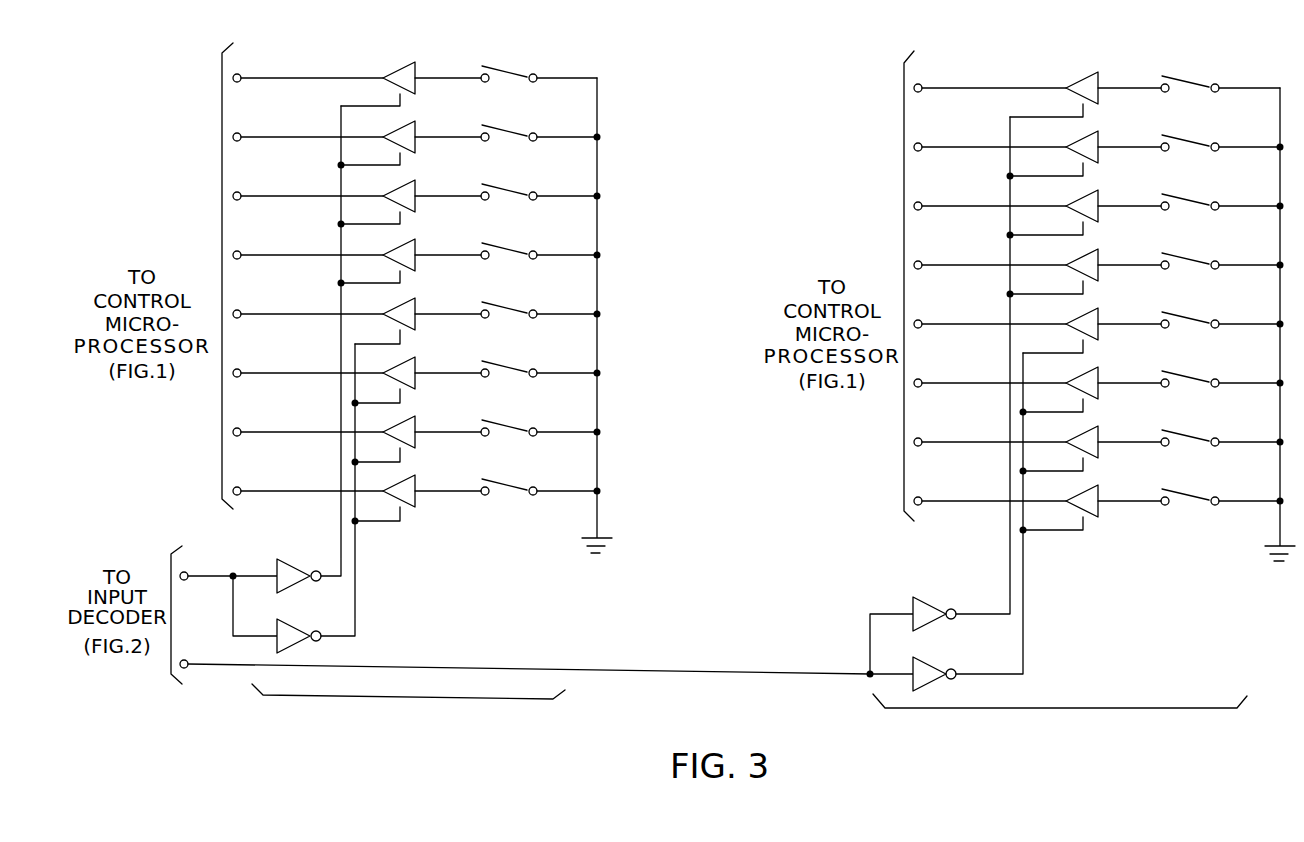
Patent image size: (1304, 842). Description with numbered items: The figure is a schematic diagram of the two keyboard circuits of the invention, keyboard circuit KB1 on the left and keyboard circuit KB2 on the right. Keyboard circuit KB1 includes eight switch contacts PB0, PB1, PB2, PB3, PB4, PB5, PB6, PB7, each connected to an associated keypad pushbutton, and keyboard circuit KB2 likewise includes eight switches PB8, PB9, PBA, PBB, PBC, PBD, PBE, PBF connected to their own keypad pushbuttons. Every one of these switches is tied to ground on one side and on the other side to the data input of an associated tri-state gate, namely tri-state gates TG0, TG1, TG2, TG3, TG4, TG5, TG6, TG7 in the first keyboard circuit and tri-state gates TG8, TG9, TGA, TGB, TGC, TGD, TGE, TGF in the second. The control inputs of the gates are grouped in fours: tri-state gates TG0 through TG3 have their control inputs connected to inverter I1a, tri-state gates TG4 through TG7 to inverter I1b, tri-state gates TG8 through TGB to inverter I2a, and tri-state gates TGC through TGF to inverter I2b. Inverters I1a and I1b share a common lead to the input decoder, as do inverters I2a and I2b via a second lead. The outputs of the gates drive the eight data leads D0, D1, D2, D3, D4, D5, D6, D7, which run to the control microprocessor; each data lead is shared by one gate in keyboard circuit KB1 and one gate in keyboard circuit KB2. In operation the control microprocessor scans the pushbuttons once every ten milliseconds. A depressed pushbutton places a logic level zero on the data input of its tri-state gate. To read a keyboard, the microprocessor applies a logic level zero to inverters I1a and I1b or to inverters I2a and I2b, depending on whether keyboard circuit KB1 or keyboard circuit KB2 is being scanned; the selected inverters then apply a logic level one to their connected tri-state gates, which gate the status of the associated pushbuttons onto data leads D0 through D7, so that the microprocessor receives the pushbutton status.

The data lead D0 is at (290, 73).
The data lead D1 is at (290, 132).
The data lead D2 is at (290, 191).
The data lead D3 is at (290, 250).
The data lead D4 is at (290, 309).
The data lead D5 is at (290, 368).
The data lead D6 is at (290, 427).
The data lead D7 is at (290, 486).
The tri-state gate TG0 is at (408, 62).
The tri-state gate TG1 is at (408, 121).
The tri-state gate TG2 is at (408, 180).
The tri-state gate TG3 is at (408, 239).
The tri-state gate TG4 is at (408, 298).
The tri-state gate TG5 is at (408, 357).
The tri-state gate TG6 is at (408, 416).
The tri-state gate TG7 is at (408, 475).
The tri-state gate TG8 is at (1091, 73).
The tri-state gate TG9 is at (1091, 132).
The tri-state gate TGA is at (1091, 191).
The tri-state gate TGB is at (1091, 250).
The tri-state gate TGC is at (1091, 309).
The tri-state gate TGD is at (1091, 368).
The tri-state gate TGE is at (1091, 427).
The tri-state gate TGF is at (1091, 486).
The switch contact PB0 is at (508, 65).
The switch contact PB1 is at (508, 124).
The switch contact PB2 is at (508, 183).
The switch contact PB3 is at (508, 242).
The switch contact PB4 is at (508, 301).
The switch contact PB5 is at (508, 360).
The switch contact PB6 is at (508, 419).
The switch contact PB7 is at (508, 478).
The switch PB8 is at (1190, 75).
The switch PB9 is at (1190, 134).
The switch PBA is at (1190, 193).
The switch PBB is at (1190, 252).
The switch PBC is at (1190, 311).
The switch PBD is at (1190, 370).
The switch PBE is at (1190, 429).
The switch PBF is at (1190, 488).
The inverter I1a is at (304, 553).
The inverter I1b is at (308, 613).
The inverter I2a is at (949, 591).
The inverter I2b is at (949, 652).
The keyboard circuit KB1 is at (525, 385).
The keyboard circuit KB2 is at (1081, 396).